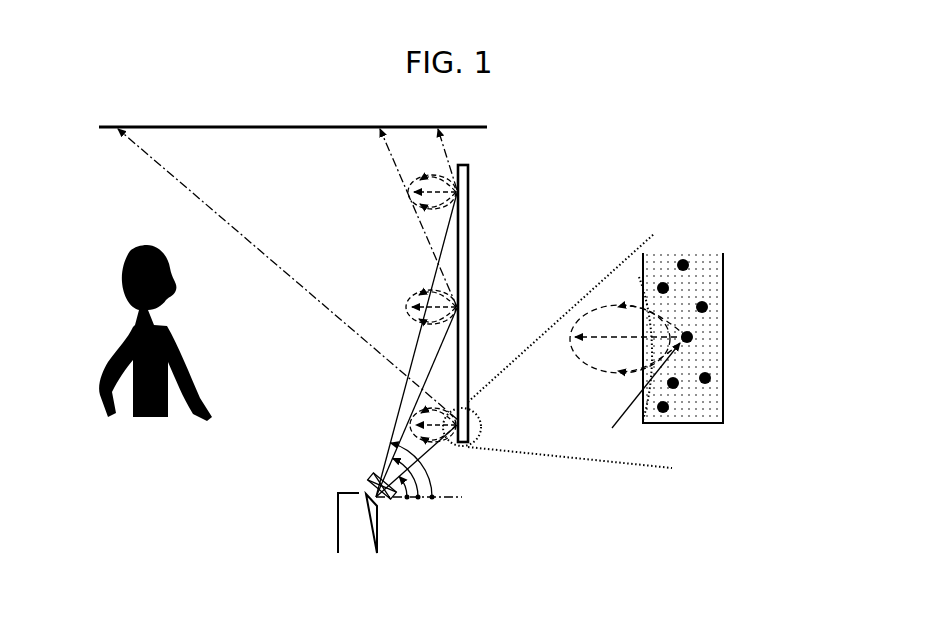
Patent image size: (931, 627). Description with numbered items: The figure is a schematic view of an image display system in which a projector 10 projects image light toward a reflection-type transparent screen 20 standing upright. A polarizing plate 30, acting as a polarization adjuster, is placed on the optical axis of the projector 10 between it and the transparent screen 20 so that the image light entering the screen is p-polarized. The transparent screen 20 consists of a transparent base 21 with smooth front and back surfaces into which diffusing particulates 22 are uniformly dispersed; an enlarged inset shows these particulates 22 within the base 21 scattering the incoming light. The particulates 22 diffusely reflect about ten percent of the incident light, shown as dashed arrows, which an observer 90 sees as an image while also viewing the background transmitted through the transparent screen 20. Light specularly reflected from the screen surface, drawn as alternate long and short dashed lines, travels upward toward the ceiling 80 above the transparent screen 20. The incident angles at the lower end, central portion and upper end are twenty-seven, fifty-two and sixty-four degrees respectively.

The projector 10 is at (377, 555).
The reflection-type transparent screen 20 is at (468, 342).
The transparent base 21 is at (723, 338).
The diffusing particulates 22 is at (707, 382).
The polarizing plate 30 is at (371, 478).
The ceiling 80 is at (270, 127).
The observer 90 is at (170, 353).